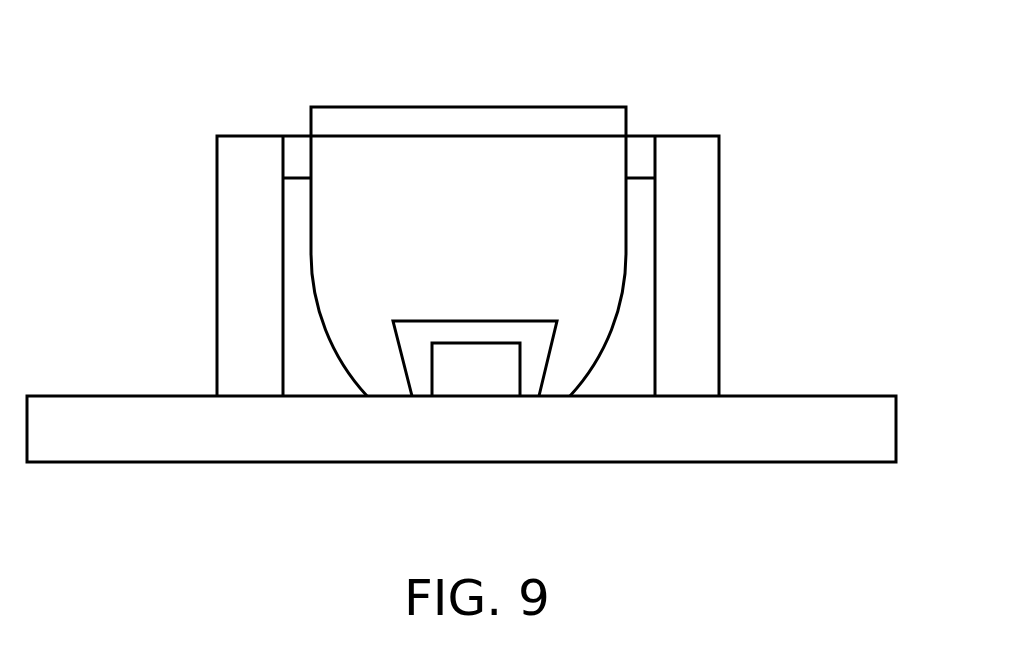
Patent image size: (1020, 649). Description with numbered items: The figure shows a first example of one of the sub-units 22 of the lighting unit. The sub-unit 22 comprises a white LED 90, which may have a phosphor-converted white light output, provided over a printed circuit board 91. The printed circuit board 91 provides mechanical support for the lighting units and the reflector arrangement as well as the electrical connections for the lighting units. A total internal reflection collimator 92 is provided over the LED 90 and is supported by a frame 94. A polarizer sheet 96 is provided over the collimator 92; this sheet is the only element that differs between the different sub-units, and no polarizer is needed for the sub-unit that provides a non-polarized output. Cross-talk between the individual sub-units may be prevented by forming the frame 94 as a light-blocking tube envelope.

The sub-unit 22 is at (121, 84).
The white LED 90 is at (447, 385).
The printed circuit board 91 is at (588, 450).
The total internal reflection collimator 92 is at (382, 250).
The frame 94 is at (697, 246).
The polarizer sheet 96 is at (531, 98).